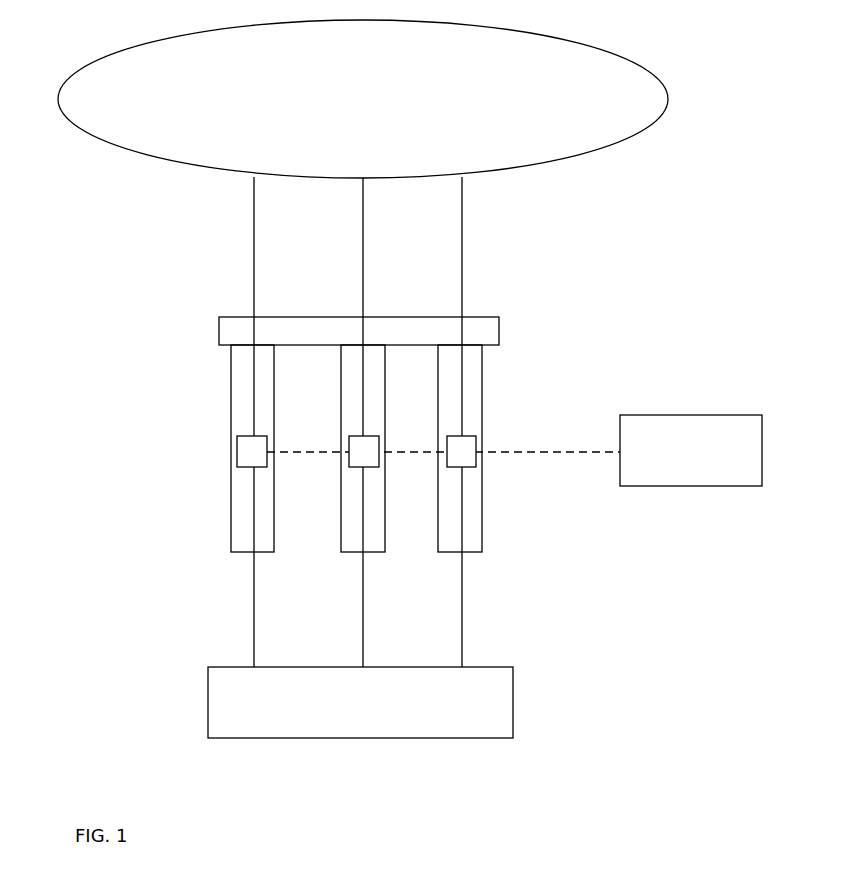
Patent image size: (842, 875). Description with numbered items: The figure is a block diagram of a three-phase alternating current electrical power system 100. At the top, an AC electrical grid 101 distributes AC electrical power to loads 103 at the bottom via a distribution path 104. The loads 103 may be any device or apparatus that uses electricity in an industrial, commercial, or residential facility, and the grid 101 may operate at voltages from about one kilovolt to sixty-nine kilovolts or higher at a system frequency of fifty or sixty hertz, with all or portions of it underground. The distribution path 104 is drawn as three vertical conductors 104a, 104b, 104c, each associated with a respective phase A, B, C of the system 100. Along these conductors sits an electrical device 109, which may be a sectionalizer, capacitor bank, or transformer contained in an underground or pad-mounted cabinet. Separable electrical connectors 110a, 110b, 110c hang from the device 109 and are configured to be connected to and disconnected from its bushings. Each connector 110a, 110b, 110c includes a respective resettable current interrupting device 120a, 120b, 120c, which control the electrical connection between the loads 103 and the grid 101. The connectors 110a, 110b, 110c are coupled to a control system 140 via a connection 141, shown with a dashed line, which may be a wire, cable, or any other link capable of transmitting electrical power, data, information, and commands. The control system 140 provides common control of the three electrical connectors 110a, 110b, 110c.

The three-phase alternating current electrical power system 100 is at (712, 17).
The AC electrical grid 101 is at (385, 113).
The loads 103 is at (360, 702).
The distribution path 104 is at (402, 422).
The first conductor 104a is at (254, 268).
The second conductor 104b is at (363, 277).
The third conductor 104c is at (462, 277).
The electrical device 109 is at (218, 340).
The first electrical connector 110a is at (245, 537).
The second electrical connector 110b is at (352, 533).
The third electrical connector 110c is at (462, 532).
The first resettable current interrupting device 120a is at (248, 452).
The second resettable current interrupting device 120b is at (367, 457).
The third resettable current interrupting device 120c is at (465, 443).
The control system 140 is at (691, 450).
The connection 141 is at (550, 452).